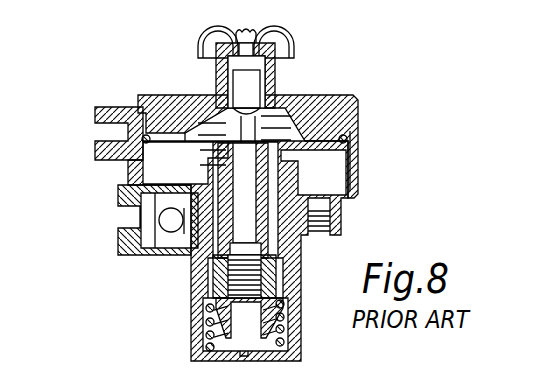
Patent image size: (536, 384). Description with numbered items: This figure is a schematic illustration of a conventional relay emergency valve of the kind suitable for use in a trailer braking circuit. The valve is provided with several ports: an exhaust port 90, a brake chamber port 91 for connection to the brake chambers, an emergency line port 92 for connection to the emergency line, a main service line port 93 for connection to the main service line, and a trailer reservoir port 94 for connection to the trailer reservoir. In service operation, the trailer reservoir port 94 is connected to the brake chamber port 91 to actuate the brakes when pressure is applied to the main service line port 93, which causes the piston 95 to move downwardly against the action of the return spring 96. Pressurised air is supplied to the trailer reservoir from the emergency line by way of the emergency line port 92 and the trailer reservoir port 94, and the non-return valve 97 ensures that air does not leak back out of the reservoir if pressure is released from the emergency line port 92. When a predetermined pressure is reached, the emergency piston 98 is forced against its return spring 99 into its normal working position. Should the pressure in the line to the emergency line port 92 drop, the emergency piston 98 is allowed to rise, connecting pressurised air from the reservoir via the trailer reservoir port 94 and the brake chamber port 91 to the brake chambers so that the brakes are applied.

The exhaust port 90 is at (240, 81).
The piston 95 is at (303, 88).
The main service line port 93 is at (118, 122).
The emergency line port 92 is at (115, 213).
The non-return valve 97 is at (160, 236).
The return spring 96 is at (238, 251).
The brake chamber port 91 is at (308, 222).
The trailer reservoir port 94 is at (252, 240).
The emergency piston 98 is at (280, 289).
The return spring 99 is at (240, 342).